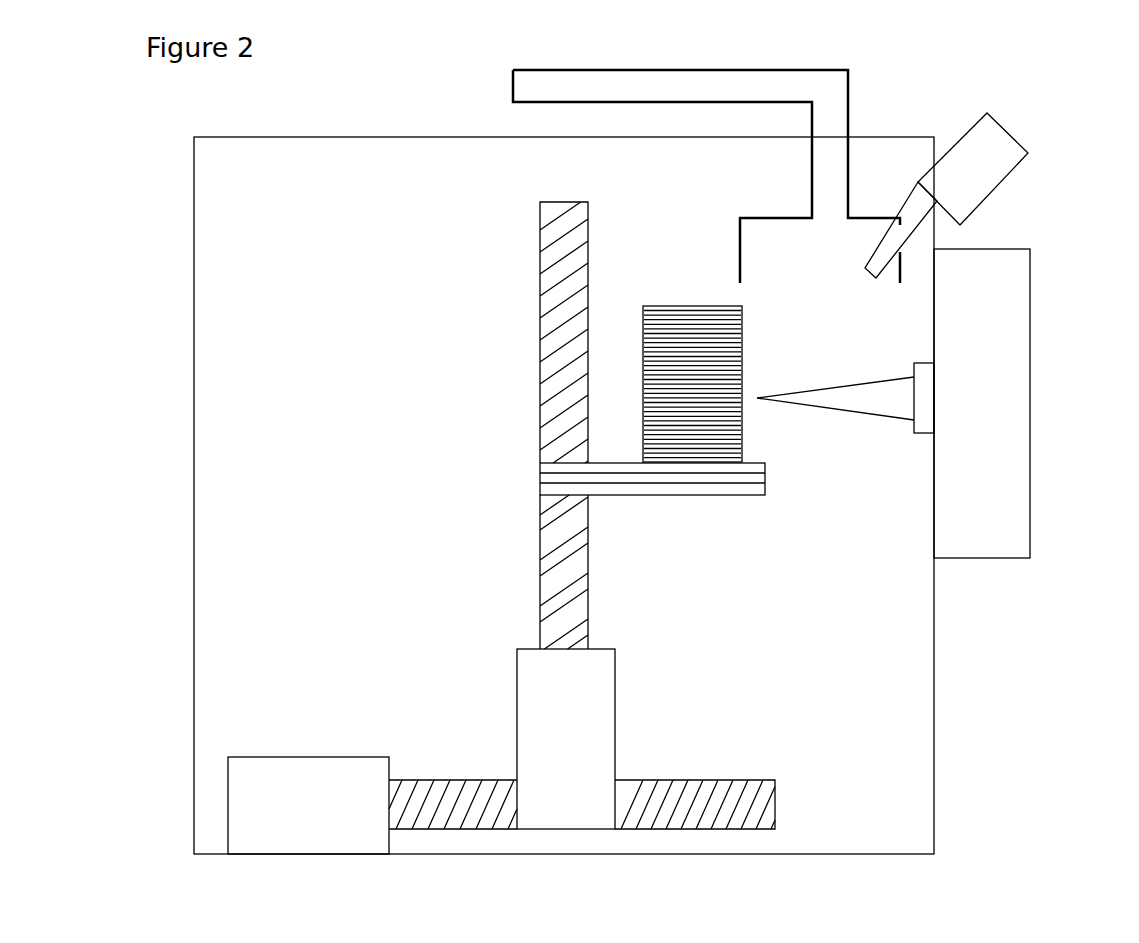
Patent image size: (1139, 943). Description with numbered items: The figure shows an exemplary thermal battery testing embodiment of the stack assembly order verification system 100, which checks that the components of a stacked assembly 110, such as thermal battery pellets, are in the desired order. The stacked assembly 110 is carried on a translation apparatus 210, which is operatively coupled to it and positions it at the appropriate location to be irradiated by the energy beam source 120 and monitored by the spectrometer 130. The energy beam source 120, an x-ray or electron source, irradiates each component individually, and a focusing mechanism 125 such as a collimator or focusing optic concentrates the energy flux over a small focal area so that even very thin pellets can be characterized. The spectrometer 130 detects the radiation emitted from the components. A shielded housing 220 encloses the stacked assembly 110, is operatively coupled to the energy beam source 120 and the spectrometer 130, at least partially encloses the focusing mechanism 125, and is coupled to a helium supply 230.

The stack assembly order verification system 100 is at (919, 78).
The stacked assembly 110 is at (742, 334).
The energy beam source 120 is at (1031, 335).
The focusing mechanism 125 is at (813, 405).
The spectrometer 130 is at (998, 167).
The translation apparatus 210 is at (615, 678).
The shielded housing 220 is at (935, 735).
The helium supply 230 is at (747, 70).